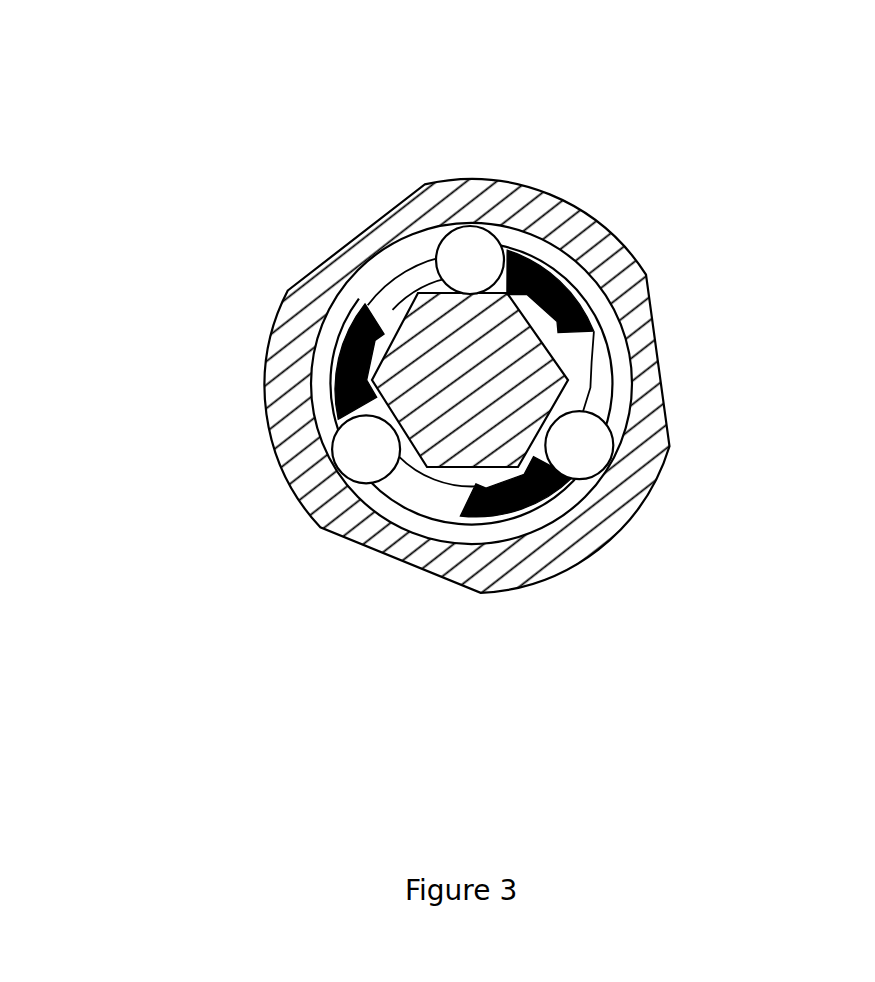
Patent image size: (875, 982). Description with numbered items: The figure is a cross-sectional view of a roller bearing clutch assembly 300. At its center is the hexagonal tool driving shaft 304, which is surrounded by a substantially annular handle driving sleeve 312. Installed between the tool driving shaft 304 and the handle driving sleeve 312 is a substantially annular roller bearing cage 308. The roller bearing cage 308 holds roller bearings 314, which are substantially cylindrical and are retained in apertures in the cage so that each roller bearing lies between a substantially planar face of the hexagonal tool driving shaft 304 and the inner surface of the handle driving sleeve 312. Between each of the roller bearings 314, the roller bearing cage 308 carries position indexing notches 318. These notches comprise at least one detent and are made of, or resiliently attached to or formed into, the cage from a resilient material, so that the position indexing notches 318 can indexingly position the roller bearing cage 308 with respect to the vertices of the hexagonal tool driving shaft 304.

The roller bearing clutch assembly 300 is at (472, 366).
The central hexagonal tool driving shaft 304 is at (450, 405).
The roller bearing cage 308 is at (590, 377).
The handle driving sleeve 312 is at (633, 433).
The roller bearings 314 is at (466, 250).
The position indexing notches 318 is at (500, 512).